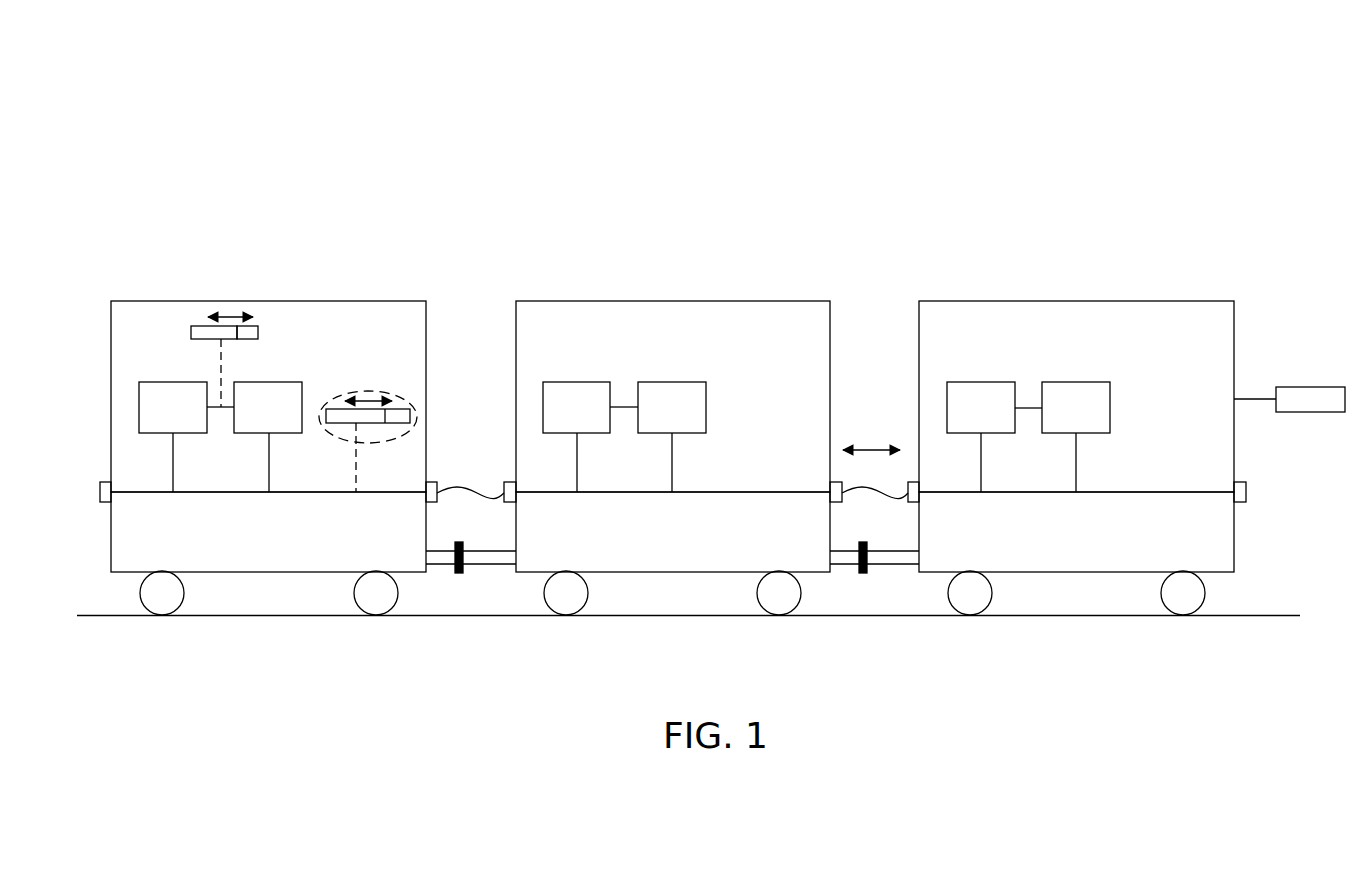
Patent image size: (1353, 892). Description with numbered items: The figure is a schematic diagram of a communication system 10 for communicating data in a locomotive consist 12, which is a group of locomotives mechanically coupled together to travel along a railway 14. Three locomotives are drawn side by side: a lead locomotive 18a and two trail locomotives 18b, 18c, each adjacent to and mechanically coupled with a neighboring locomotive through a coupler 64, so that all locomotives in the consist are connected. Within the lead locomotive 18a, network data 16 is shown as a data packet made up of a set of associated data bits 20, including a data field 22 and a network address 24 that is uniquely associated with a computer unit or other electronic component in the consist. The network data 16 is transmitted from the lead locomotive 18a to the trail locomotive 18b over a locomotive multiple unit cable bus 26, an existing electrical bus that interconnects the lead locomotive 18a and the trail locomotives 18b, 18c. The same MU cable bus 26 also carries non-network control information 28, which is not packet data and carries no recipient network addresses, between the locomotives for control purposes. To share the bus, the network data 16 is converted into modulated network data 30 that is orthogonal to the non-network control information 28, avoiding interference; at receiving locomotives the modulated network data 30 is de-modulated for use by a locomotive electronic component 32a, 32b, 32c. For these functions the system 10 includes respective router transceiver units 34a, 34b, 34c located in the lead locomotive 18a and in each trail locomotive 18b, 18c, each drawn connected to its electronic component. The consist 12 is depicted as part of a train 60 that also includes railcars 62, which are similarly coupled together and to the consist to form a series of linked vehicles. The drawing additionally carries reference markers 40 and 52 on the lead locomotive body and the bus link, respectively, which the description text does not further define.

The communication system 10 is at (444, 136).
The locomotive consist 12 is at (1152, 260).
The railway 14 is at (95, 617).
The network data 16 is at (266, 303).
The lead locomotive 18a is at (139, 301).
The trail locomotive 18b is at (674, 301).
The trail locomotive 18c is at (1077, 300).
The associated data bits 20 is at (258, 294).
The data field 22 is at (191, 333).
The network address 24 is at (258, 333).
The locomotive multiple unit (MU) cable bus 26 is at (465, 463).
The non-network control information 28 is at (873, 447).
The modulated network data 30 is at (368, 391).
The locomotive electronic component 32a is at (196, 435).
The router transceiver unit 34a is at (293, 435).
The locomotive electronic component 32b is at (577, 382).
The router transceiver unit 34b is at (672, 382).
The locomotive electronic component 32c is at (982, 382).
The router transceiver unit 34c is at (1076, 382).
The vehicle chassis / body 40 is at (306, 508).
The communication link 52 is at (480, 510).
The train 60 is at (1250, 189).
The railcars 62 is at (1310, 387).
The coupler 64 is at (482, 560).